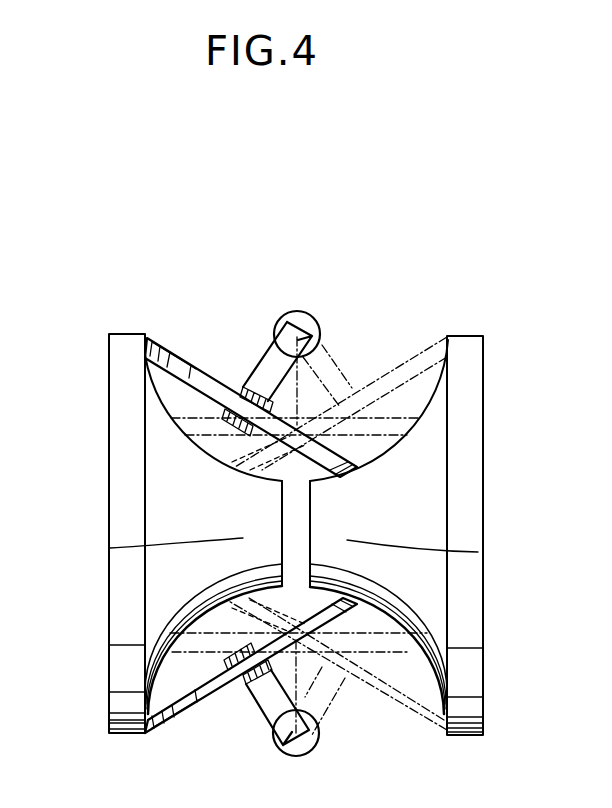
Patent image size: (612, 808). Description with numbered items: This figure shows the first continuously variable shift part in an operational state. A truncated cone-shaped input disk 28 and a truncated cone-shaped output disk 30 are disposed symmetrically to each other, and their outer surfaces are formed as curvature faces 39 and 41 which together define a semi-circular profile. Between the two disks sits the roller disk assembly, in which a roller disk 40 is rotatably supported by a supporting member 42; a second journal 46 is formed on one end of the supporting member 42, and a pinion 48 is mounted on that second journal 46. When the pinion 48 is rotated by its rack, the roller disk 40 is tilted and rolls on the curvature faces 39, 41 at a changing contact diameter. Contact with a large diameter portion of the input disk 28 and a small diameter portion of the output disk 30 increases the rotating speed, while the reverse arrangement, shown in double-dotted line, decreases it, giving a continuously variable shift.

The input disk 28 is at (112, 548).
The output disk 30 is at (478, 552).
The curvature face 39 is at (150, 377).
The curvature face 41 is at (447, 378).
The roller disk 40 is at (170, 346).
The supporting member 42 is at (249, 382).
The second journal 46 is at (277, 353).
The pinion 48 is at (311, 323).